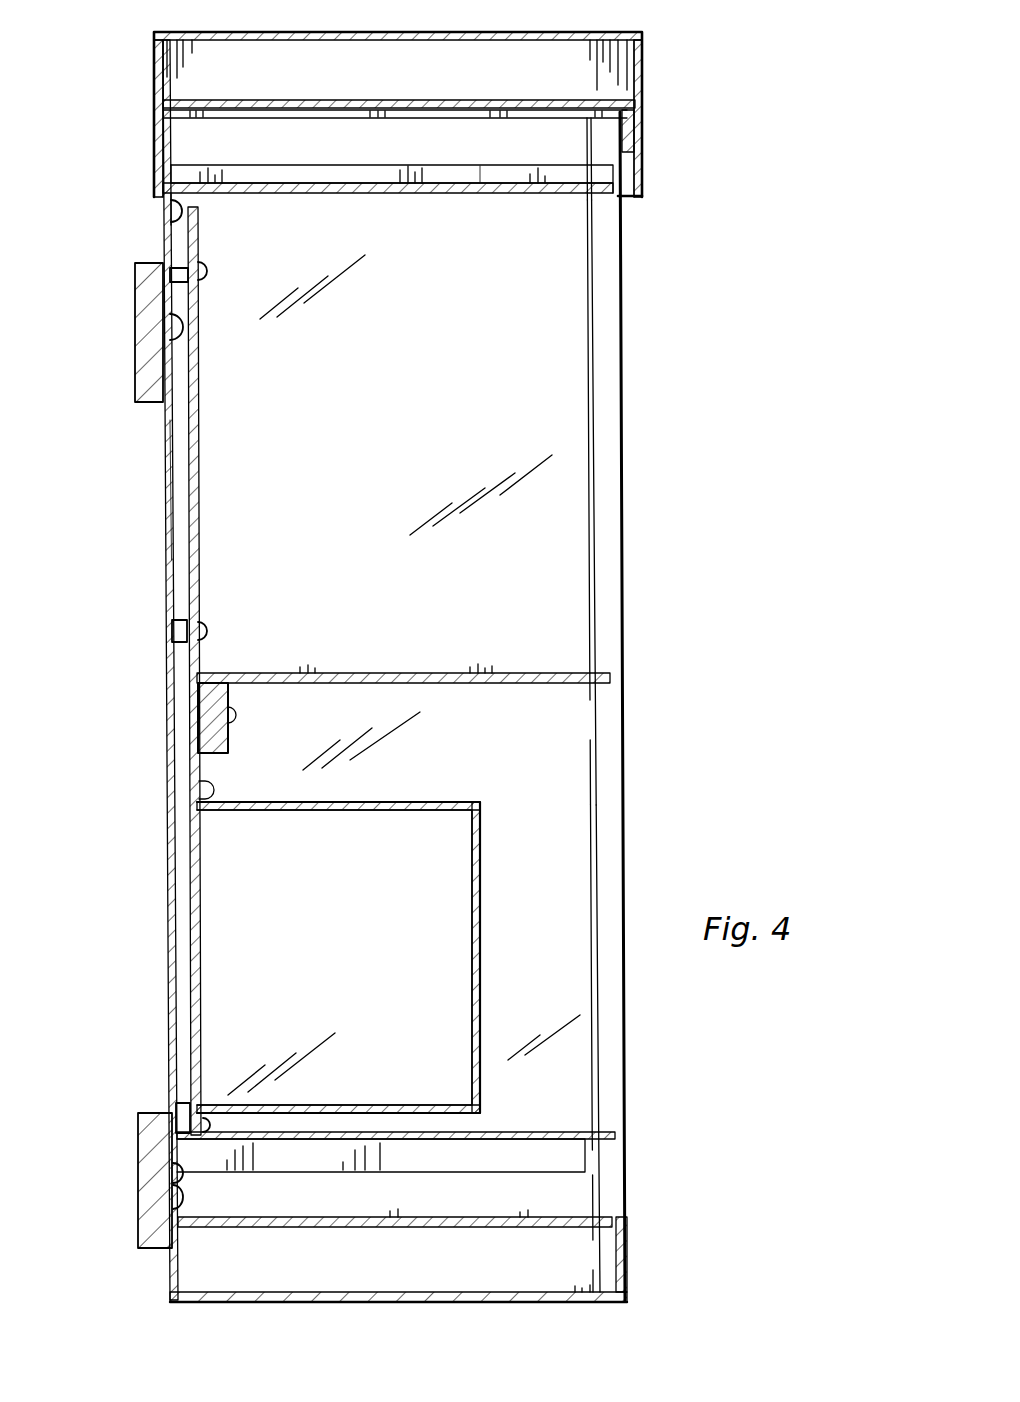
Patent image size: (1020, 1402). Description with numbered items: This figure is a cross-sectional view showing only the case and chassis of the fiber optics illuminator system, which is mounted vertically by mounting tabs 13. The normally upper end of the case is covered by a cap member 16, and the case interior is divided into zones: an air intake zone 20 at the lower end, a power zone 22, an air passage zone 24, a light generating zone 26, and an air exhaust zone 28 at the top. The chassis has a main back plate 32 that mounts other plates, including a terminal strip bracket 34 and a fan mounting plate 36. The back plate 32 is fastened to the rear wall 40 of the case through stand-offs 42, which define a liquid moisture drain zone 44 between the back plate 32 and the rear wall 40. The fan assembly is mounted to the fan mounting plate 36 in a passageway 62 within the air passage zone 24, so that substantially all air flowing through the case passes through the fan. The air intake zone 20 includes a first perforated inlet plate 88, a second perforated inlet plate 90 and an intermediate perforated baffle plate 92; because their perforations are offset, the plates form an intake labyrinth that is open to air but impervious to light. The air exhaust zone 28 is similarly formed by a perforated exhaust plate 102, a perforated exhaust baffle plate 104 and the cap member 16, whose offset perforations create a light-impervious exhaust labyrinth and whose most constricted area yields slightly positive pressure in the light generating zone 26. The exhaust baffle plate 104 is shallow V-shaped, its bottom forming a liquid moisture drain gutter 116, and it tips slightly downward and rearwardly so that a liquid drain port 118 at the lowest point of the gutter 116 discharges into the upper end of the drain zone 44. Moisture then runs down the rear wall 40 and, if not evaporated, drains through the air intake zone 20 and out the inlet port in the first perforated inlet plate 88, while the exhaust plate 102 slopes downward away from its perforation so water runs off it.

The cap member 16 is at (641, 76).
The perforated exhaust plate 102 is at (355, 100).
The perforated exhaust baffle plate 104 is at (492, 168).
The air exhaust zone 28 is at (662, 155).
The liquid drain port 118 is at (172, 200).
The liquid moisture drain gutter 116 is at (446, 180).
The stand-offs 42 is at (186, 262).
The mounting tabs 13 is at (152, 335).
The back plate 32 is at (202, 378).
The liquid moisture drain zone 44 is at (184, 500).
The rear wall 40 is at (165, 556).
The passageway 62 is at (345, 672).
The fan mounting plate 36 is at (552, 672).
The light generating zone 26 is at (655, 450).
The air passage zone 24 is at (642, 672).
The power zone 22 is at (655, 805).
The terminal strip bracket 34 is at (481, 928).
The second perforated inlet plate 90 is at (470, 1140).
The intermediate perforated baffle plate 92 is at (462, 1226).
The air intake zone 20 is at (668, 1230).
The first perforated inlet plate 88 is at (192, 1302).